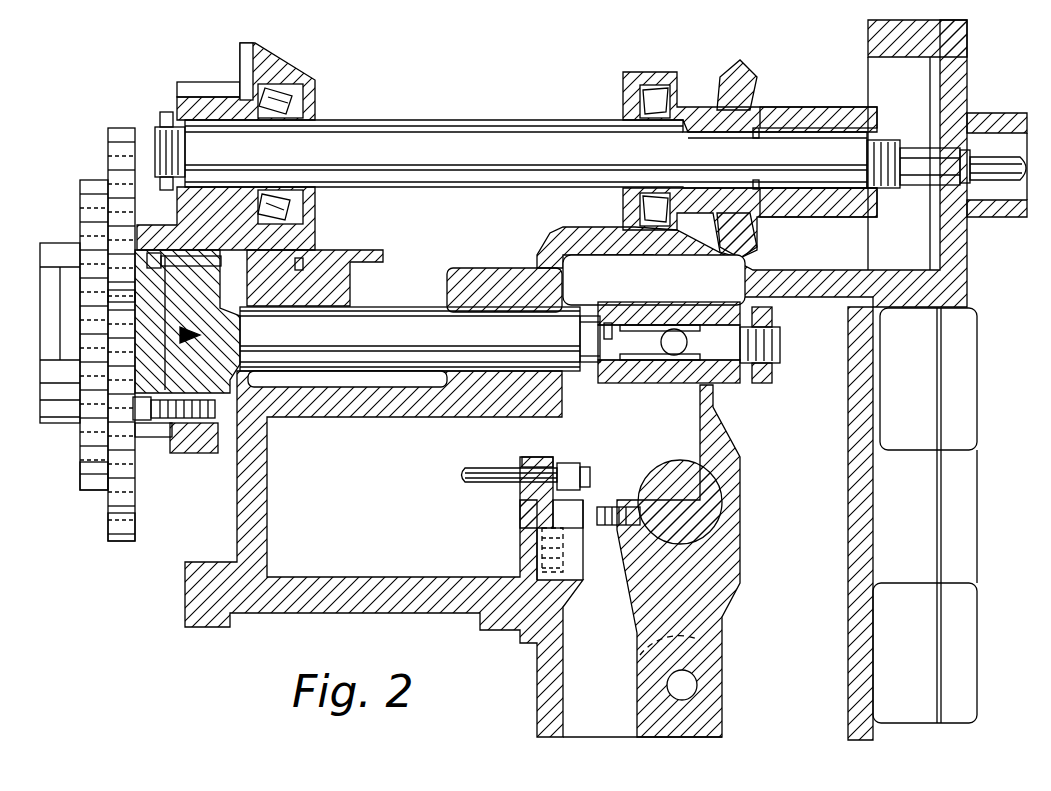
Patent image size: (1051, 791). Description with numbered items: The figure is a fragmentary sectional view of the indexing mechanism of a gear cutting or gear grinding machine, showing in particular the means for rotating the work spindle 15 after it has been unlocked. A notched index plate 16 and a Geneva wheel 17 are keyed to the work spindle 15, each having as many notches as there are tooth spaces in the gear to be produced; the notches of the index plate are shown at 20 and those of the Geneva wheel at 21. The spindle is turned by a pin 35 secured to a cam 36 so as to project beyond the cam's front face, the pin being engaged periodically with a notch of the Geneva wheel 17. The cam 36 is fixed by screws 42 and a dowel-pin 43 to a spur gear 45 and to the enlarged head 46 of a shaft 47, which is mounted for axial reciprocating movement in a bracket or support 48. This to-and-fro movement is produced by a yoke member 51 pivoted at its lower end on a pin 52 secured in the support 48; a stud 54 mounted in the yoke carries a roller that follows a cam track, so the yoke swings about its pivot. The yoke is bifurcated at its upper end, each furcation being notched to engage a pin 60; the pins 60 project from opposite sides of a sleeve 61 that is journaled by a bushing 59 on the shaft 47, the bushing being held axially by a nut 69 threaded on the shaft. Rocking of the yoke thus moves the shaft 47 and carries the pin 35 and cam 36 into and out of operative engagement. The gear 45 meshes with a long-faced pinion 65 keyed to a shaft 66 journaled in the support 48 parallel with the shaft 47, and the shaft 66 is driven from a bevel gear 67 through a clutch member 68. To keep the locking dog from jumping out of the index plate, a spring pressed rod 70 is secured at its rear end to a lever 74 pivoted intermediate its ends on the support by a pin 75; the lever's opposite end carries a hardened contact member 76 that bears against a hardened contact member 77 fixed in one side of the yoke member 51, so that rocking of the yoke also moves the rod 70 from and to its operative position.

The work spindle 15 is at (62, 420).
The notched index plate 16 is at (96, 490).
The Geneva wheel 17 is at (113, 541).
The notches of the index plate 20 is at (80, 232).
The notches of the Geneva wheel 21 is at (130, 170).
The pin 35 is at (115, 296).
The cam 36 is at (145, 440).
The screws 42 is at (172, 452).
The dowel-pin 43 is at (300, 262).
The spur gear 45 is at (205, 455).
The enlarged head 46 is at (280, 290).
The shaft 47 is at (396, 328).
The bracket or support 48 is at (330, 585).
The yoke member 51 is at (740, 460).
The pin 52 is at (720, 680).
The stud 54 is at (740, 503).
The bushing 59 is at (725, 385).
The pins 60 is at (668, 333).
The sleeve 61 is at (640, 320).
The long-faced pinion 65 is at (215, 85).
The shaft 66 is at (456, 140).
The bevel gear 67 is at (750, 80).
The clutch member 68 is at (800, 120).
The nut 69 is at (772, 375).
The spring pressed rod 70 is at (490, 480).
The lever 74 is at (545, 462).
The pin 75 is at (537, 513).
The hardened contact member 76 is at (598, 535).
The hardened contact member 77 is at (602, 505).